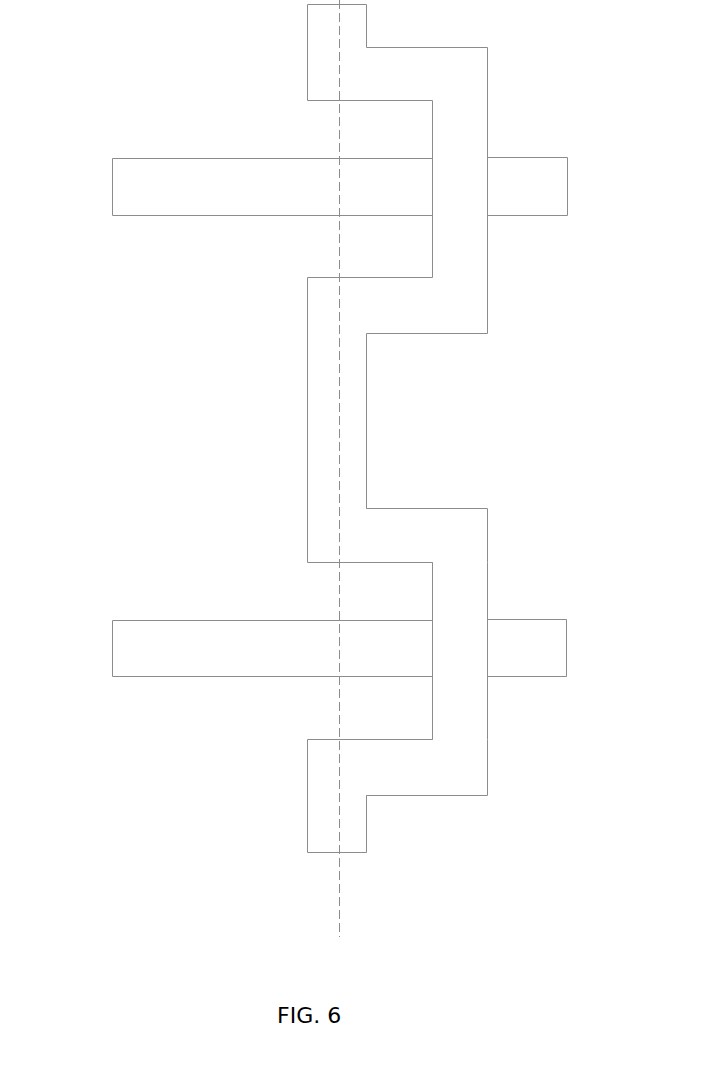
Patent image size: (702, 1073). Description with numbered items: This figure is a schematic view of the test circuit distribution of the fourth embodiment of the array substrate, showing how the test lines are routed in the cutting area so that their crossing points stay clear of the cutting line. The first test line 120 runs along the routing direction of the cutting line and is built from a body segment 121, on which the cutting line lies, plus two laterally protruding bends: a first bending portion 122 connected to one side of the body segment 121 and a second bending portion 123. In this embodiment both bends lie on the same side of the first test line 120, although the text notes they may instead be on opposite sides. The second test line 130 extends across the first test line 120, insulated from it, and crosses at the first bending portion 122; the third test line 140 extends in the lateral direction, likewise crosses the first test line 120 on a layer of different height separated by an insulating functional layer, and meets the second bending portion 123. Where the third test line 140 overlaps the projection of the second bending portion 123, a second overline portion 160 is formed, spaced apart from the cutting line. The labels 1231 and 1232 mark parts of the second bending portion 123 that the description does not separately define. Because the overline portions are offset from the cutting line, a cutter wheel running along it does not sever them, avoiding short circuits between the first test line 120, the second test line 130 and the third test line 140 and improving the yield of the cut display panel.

The first test line 120 is at (400, 433).
The body segment 121 is at (307, 412).
The first bending portion 122 is at (487, 253).
The second bending portion 123 is at (488, 547).
The tooth body 1231 is at (457, 715).
The tooth tip 1232 is at (402, 537).
The second test line 130 is at (128, 192).
The third test line 140 is at (143, 645).
The second overline portion 160 is at (497, 606).